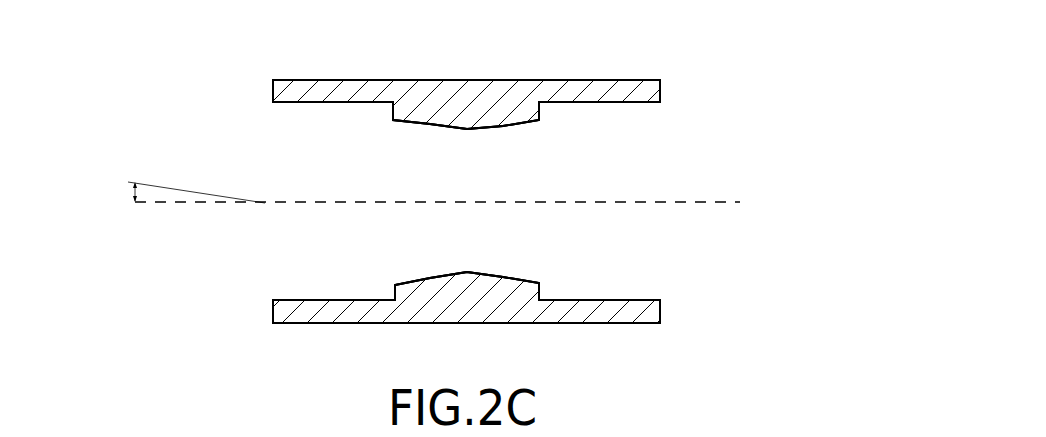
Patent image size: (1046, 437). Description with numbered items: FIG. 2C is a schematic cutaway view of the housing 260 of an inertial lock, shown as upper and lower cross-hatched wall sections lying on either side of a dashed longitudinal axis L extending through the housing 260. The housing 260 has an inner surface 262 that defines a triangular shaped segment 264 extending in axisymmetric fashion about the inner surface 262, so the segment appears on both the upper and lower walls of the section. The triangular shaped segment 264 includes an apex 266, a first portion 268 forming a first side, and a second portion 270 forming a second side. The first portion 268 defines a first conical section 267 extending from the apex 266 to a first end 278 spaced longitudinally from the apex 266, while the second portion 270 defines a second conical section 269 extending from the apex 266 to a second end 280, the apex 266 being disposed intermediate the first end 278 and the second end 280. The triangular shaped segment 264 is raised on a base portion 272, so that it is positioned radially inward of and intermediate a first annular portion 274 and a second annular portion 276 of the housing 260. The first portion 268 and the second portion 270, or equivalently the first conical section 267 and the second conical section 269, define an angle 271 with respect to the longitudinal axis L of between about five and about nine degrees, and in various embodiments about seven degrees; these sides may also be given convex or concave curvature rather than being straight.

The housing 260 is at (632, 80).
The inner surface 262 is at (647, 103).
The triangular shaped segment 264 is at (547, 138).
The apex 266 is at (437, 277).
The first conical section 267 is at (427, 125).
The first portion 268 is at (478, 274).
The second conical section 269 is at (502, 123).
The second portion 270 is at (407, 283).
The angle 271 is at (132, 190).
The base portion 272 is at (393, 109).
The first annular portion 274 is at (283, 103).
The second annular portion 276 is at (637, 300).
The first end 278 is at (392, 298).
The second end 280 is at (540, 298).
The longitudinal axis L is at (740, 202).